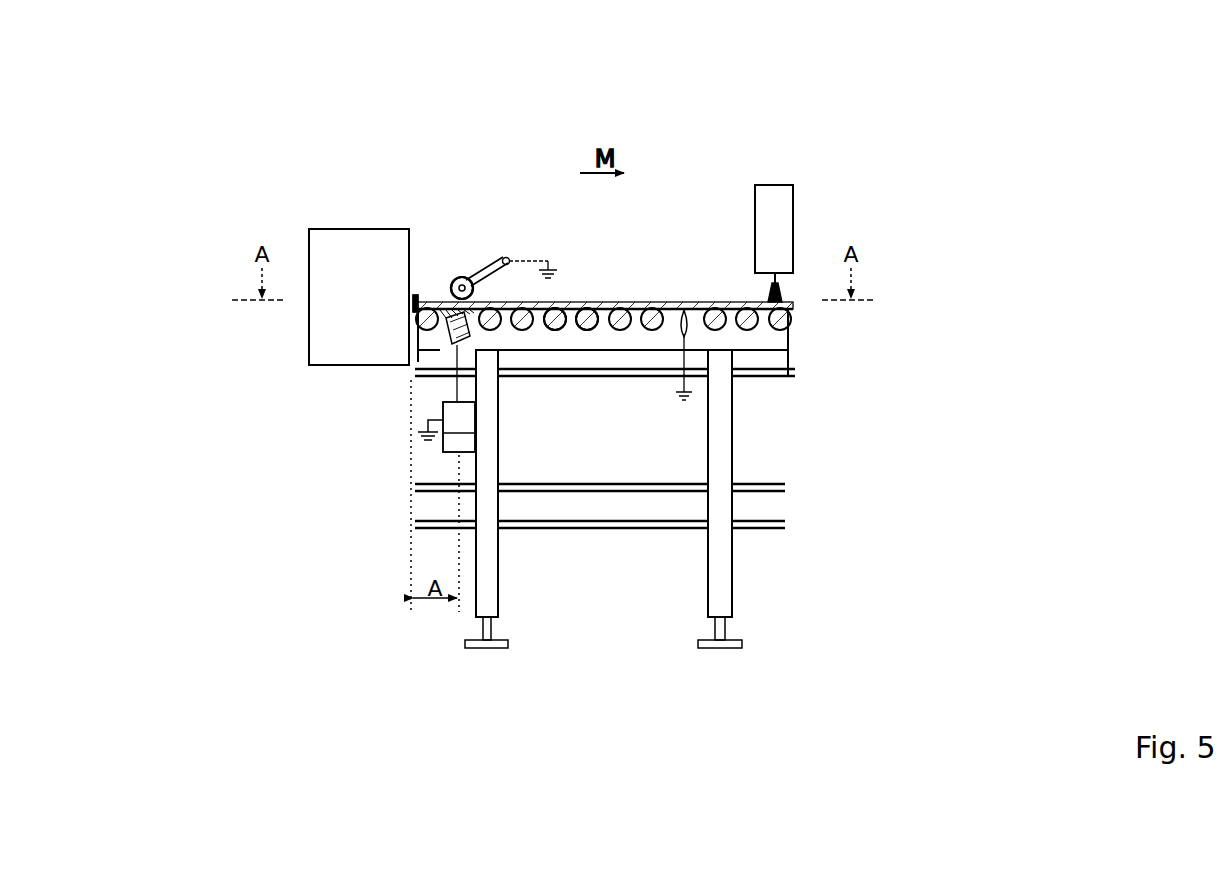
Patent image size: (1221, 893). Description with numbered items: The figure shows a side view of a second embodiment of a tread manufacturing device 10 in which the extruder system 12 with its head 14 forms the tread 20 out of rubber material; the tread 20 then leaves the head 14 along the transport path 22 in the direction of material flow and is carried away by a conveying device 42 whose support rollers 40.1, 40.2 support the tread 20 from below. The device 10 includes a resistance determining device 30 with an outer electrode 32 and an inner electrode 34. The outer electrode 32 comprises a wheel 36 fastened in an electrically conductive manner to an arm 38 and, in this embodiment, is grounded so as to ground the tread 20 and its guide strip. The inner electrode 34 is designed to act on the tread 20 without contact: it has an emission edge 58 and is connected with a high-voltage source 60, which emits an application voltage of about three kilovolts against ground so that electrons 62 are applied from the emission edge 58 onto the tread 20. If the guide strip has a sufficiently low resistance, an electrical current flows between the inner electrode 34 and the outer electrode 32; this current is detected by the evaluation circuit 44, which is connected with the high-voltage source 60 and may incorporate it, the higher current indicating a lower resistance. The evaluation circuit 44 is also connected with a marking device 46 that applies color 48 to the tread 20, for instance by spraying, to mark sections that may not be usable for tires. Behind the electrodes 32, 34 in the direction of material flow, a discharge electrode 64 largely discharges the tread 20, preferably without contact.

The tread manufacturing device 10 is at (733, 138).
The extruder system 12 is at (384, 166).
The head 14 is at (330, 229).
The tread 20 is at (627, 300).
The transport path 22 is at (716, 292).
The resistance determining device 30 is at (386, 493).
The outer electrode 32 is at (449, 274).
The inner electrode 34 is at (415, 369).
The wheel 36 is at (450, 293).
The arm 38 is at (496, 258).
The support roller 40.1 is at (555, 330).
The second support roller 40.2 is at (588, 330).
The conveying device 42 is at (800, 318).
The evaluation circuit 44 is at (529, 330).
The marking device 46 is at (774, 229).
The color 48 is at (782, 285).
The emission edge 58 is at (447, 333).
The high-voltage source 60 is at (443, 418).
The electrons 62 is at (440, 310).
The discharge electrode 64 is at (690, 332).